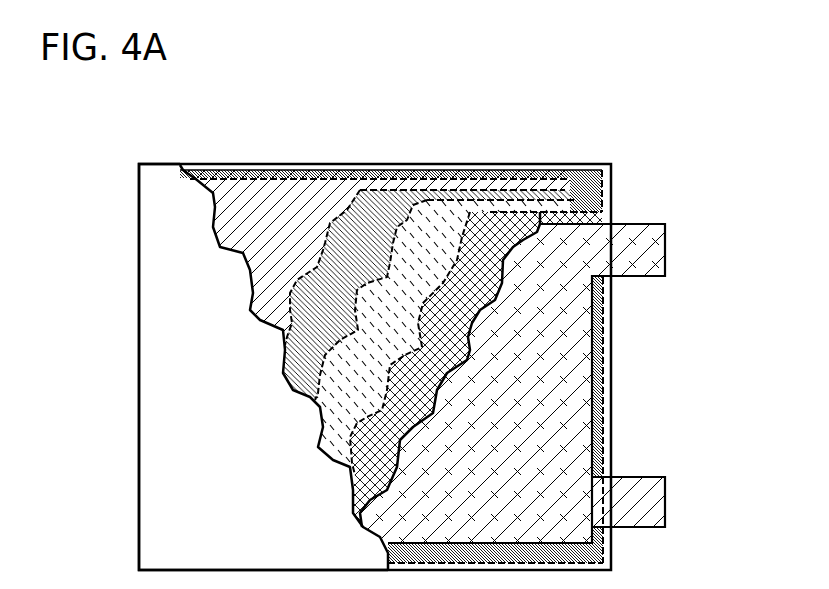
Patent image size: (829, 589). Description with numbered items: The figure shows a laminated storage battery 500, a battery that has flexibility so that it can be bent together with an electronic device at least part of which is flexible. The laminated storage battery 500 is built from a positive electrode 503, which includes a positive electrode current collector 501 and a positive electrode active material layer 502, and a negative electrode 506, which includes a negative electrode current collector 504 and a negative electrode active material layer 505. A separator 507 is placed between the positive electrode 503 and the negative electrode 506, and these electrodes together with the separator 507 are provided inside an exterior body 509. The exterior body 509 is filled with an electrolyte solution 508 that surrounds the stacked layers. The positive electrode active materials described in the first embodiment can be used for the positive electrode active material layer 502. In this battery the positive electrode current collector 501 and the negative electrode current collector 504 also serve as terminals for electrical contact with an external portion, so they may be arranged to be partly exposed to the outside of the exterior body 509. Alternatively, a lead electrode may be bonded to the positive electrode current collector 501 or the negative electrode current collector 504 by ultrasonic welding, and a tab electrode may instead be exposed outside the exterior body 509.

The laminated storage battery 500 is at (160, 121).
The positive electrode current collector 501 is at (557, 250).
The positive electrode active material layer 502 is at (520, 193).
The positive electrode 503 is at (573, 86).
The negative electrode current collector 504 is at (334, 197).
The negative electrode active material layer 505 is at (380, 193).
The negative electrode 506 is at (397, 86).
The separator 507 is at (458, 207).
The electrolyte solution 508 is at (606, 334).
The exterior body 509 is at (153, 441).